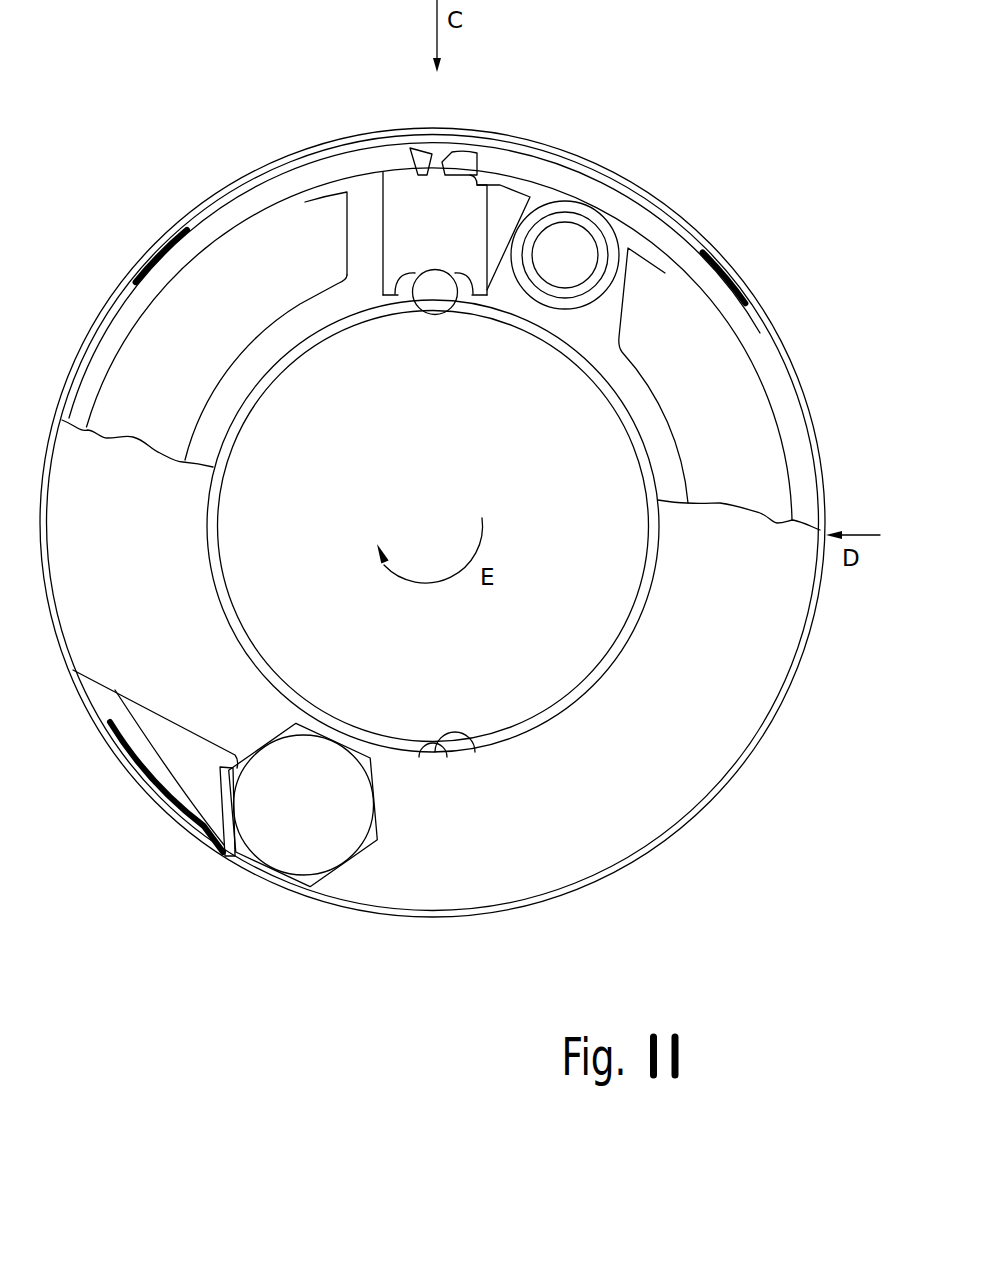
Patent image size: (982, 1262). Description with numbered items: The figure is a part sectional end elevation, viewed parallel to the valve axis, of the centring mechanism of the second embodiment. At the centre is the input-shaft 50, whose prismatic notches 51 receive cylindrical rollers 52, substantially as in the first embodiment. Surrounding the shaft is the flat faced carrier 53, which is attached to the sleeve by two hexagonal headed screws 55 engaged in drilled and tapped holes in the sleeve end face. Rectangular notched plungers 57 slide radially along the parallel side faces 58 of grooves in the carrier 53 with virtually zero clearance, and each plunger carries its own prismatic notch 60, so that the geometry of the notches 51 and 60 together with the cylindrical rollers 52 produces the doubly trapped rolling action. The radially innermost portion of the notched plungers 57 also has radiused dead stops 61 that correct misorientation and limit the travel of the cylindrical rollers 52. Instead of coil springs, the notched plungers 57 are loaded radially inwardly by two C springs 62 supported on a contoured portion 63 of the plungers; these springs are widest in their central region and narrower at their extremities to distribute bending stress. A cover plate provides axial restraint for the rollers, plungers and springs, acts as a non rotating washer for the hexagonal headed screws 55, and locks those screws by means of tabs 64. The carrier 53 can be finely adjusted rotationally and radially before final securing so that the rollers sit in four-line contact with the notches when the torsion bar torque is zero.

The input-shaft 50 is at (270, 405).
The prismatic notches 51 is at (424, 316).
The cylindrical rollers 52 is at (442, 293).
The carrier 53 is at (653, 427).
The hexagonal headed screws 55 is at (293, 851).
The notched plungers 57 is at (390, 212).
The side faces 58 is at (493, 186).
The prismatic notches 60 is at (440, 267).
The radiused dead stops 61 is at (478, 277).
The C springs 62 is at (118, 326).
The contoured portion 63 is at (410, 160).
The tabs 64 is at (225, 833).